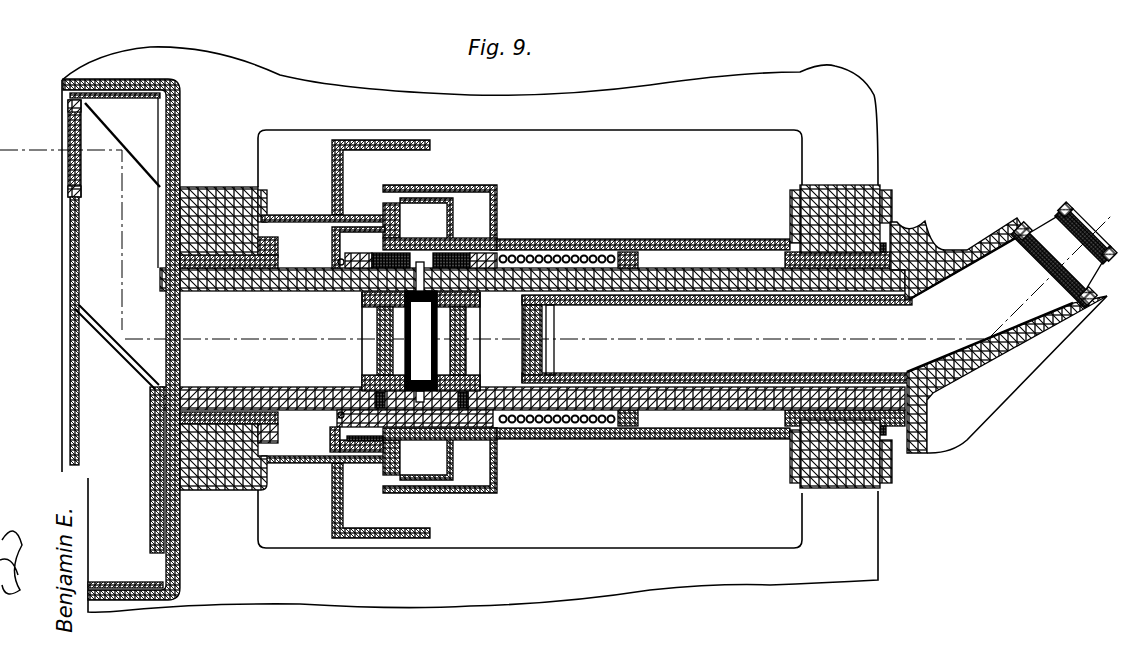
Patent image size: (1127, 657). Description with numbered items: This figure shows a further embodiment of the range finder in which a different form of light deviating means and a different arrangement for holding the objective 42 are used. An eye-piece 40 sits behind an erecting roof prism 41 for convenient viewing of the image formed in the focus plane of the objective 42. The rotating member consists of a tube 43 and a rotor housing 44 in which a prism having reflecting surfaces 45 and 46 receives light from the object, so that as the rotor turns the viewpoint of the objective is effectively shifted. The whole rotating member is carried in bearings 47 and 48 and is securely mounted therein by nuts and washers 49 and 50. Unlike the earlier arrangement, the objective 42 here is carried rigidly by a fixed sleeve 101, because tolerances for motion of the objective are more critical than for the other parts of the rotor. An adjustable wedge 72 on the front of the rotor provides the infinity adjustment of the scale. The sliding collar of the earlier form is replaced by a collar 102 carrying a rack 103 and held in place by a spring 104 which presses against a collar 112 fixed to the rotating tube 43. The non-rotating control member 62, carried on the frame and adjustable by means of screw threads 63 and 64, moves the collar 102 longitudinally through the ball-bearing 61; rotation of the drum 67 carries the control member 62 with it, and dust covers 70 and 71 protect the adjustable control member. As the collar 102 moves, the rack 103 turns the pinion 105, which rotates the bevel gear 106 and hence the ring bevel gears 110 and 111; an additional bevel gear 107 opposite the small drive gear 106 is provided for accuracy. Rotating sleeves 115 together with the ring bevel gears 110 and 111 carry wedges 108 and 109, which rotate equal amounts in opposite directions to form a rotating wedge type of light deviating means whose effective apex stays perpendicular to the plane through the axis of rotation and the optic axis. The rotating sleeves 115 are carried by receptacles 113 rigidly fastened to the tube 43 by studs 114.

The eye-piece 40 is at (1064, 222).
The erecting roof prism 41 is at (998, 335).
The objective 42 is at (551, 330).
The tube 43 is at (262, 393).
The rotor housing 44 is at (165, 124).
The reflecting surface 45 is at (96, 322).
The reflecting surface 46 is at (143, 173).
The bearing 47 is at (182, 258).
The bearing 48 is at (790, 262).
The nut and washer 49 is at (276, 436).
The nut and washer 50 is at (903, 236).
The ball-bearing 61 is at (338, 262).
The control member 62 is at (333, 235).
The screw thread 63 is at (345, 445).
The screw thread 64 is at (457, 236).
The drum 67 is at (430, 144).
The dust cover 70 is at (470, 190).
The dust cover 71 is at (292, 214).
The adjustable wedge 72 is at (68, 128).
The fixed sleeve 101 is at (716, 376).
The collar 102 is at (503, 240).
The rack 103 is at (458, 246).
The spring 104 is at (558, 251).
The pinion 105 is at (393, 229).
The bevel gear 106 is at (362, 300).
The bevel gear 107 is at (438, 394).
The wedge 108 is at (377, 320).
The wedge 109 is at (467, 326).
The ring bevel gear 110 is at (410, 347).
The ring bevel gear 111 is at (438, 356).
The collar 112 is at (634, 252).
The receptacle 113 is at (363, 380).
The stud 114 is at (481, 378).
The rotating sleeve 115 is at (370, 375).